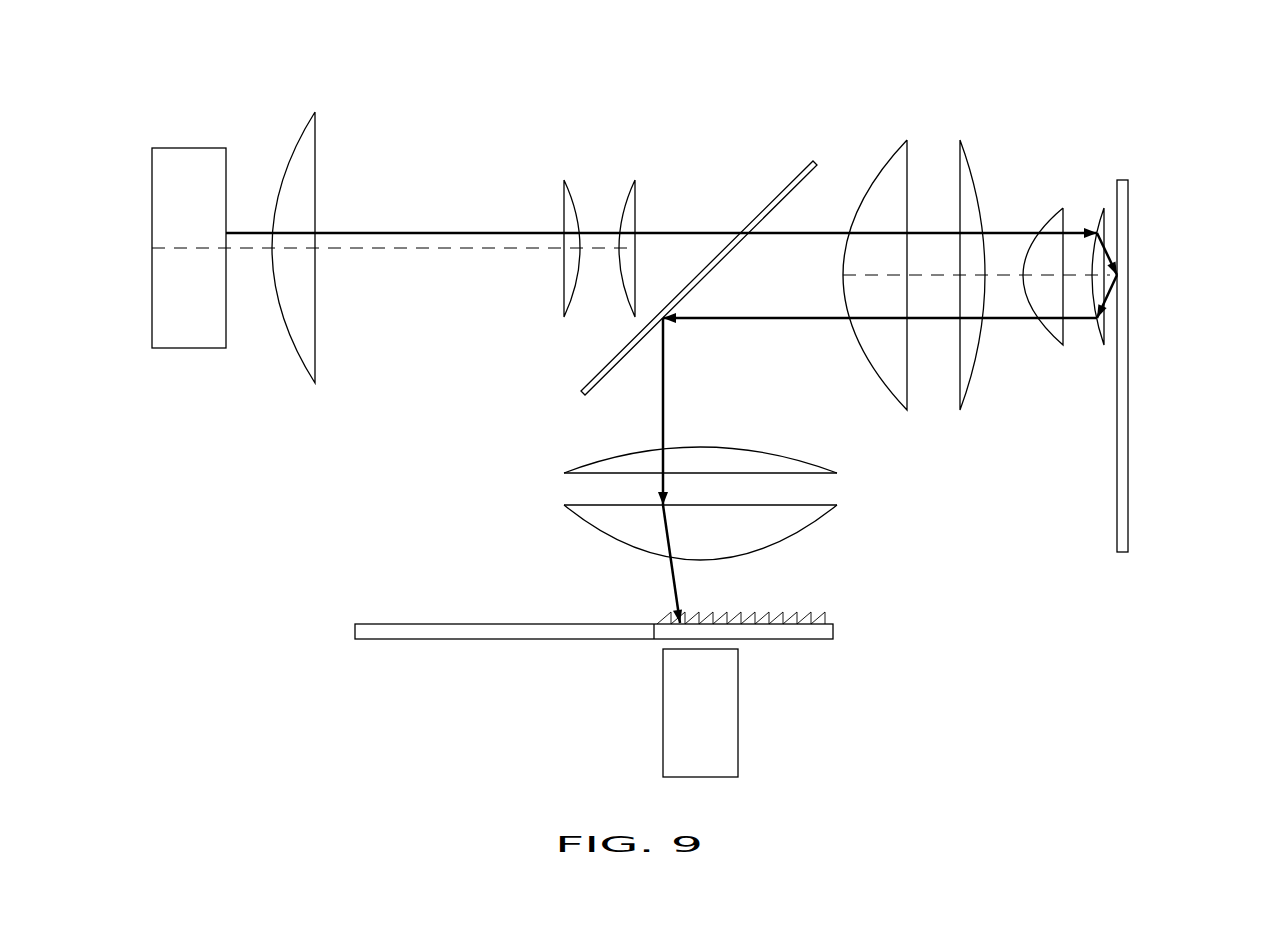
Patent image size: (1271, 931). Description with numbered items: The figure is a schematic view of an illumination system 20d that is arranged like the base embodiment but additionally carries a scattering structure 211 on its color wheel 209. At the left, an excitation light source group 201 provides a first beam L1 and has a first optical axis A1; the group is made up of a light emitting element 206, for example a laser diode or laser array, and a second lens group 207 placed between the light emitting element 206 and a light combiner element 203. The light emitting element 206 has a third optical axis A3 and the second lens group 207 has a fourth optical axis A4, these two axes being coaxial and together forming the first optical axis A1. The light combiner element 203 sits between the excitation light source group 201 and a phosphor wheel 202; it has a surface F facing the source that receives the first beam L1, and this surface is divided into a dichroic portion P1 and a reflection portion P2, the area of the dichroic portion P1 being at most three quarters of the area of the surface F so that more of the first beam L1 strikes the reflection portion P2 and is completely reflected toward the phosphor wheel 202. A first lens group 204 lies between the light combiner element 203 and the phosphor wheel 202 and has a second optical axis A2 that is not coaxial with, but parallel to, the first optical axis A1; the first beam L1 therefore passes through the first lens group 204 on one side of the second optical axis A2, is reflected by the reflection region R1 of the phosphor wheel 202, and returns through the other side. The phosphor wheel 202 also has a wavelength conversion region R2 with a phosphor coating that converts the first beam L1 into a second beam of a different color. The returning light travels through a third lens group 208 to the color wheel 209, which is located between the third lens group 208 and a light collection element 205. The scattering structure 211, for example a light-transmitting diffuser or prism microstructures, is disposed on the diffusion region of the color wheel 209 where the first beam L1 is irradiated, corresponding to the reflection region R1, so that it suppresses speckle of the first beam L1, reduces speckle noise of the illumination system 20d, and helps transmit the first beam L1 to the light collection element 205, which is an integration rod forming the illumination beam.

The illumination system 20d is at (108, 92).
The excitation light source group 201 is at (477, 52).
The light emitting element 206 is at (200, 158).
The second lens group 207 is at (272, 103).
The first beam L1 is at (478, 233).
The light combiner element 203 is at (802, 190).
The surface F is at (742, 222).
The dichroic portion P1 is at (750, 218).
The reflection portion P2 is at (598, 373).
The first lens group 204 is at (1103, 115).
The phosphor wheel 202 is at (1122, 532).
The reflection region R1 is at (1103, 190).
The wavelength conversion region R2 is at (1115, 512).
The first optical axis A1 is at (172, 427).
The second optical axis A2 is at (1003, 283).
The third optical axis A3 is at (205, 253).
The fourth optical axis A4 is at (418, 253).
The third lens group 208 is at (857, 447).
The color wheel 209 is at (398, 624).
The scattering structure 211 is at (826, 612).
The light collection element 205 is at (713, 718).